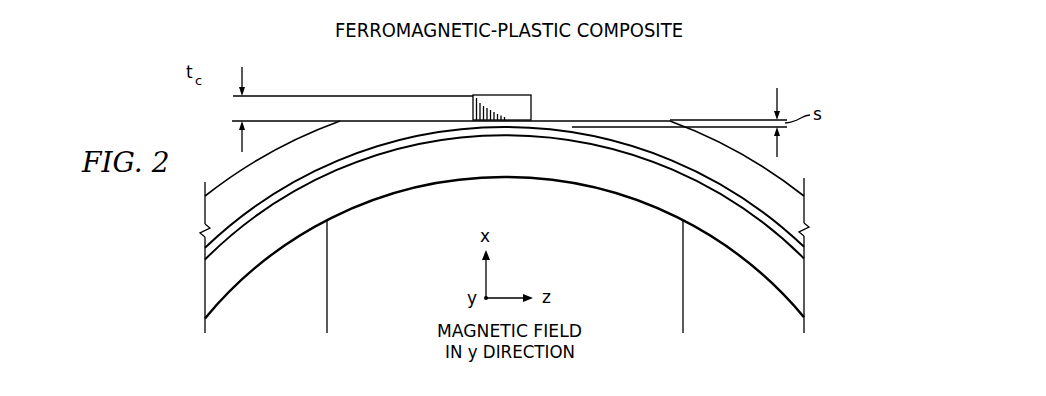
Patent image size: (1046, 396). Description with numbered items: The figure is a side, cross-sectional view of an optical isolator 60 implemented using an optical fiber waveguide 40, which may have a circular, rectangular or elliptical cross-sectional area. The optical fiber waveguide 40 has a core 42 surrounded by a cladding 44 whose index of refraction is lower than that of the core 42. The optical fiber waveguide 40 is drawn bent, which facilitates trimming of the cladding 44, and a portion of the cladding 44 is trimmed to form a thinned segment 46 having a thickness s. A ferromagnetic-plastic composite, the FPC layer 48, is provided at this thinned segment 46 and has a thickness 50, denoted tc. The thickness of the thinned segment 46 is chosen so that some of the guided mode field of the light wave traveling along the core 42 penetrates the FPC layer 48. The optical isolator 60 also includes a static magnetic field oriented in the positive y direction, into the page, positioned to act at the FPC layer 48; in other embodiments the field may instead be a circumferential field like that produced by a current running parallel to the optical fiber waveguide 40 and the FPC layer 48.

The optical fiber waveguide 40 is at (542, 227).
The core 42 is at (800, 250).
The cladding 44 is at (745, 288).
The thinned segment 46 is at (480, 127).
The FPC layer 48 is at (503, 95).
The thickness 50 is at (237, 110).
The optical isolator 60 is at (732, 78).